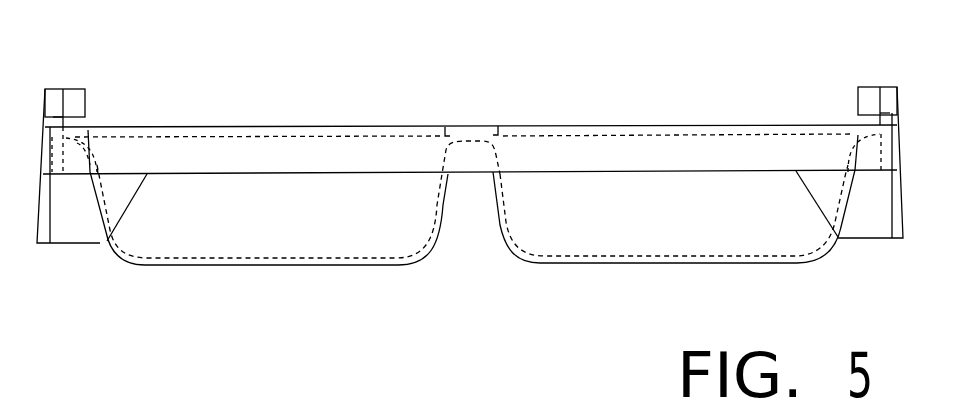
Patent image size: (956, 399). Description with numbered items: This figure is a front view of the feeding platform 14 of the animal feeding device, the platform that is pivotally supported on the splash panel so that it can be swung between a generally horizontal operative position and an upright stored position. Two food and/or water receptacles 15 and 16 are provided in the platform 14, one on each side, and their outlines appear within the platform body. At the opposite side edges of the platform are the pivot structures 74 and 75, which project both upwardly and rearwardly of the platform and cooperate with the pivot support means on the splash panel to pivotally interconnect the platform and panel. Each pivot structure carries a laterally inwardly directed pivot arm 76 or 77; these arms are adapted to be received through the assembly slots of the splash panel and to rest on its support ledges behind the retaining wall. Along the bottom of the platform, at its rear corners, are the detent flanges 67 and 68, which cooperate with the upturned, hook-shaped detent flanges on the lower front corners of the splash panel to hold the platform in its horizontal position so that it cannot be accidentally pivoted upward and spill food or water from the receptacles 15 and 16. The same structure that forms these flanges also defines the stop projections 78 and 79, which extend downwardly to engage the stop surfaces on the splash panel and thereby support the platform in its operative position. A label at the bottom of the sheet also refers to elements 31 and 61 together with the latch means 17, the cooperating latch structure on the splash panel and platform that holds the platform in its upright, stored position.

The feeding platform 14 is at (627, 264).
The food and/or water receptacle 15 is at (267, 267).
The food and/or water receptacle 16 is at (598, 264).
The pivot structure 74 is at (113, 73).
The pivot arm 76 is at (78, 103).
The pivot structure 75 is at (828, 72).
The pivot arm 77 is at (868, 100).
The detent flange 67 is at (123, 206).
The stop projection 78 is at (72, 222).
The detent flange 68 is at (859, 203).
The stop projection 79 is at (866, 215).
The temple 31 is at (205, 391).
The temple member 61 is at (205, 391).
The latch means 17 is at (205, 391).